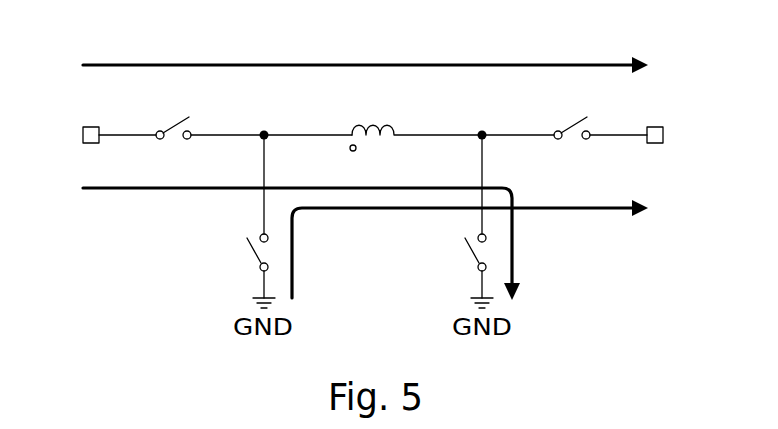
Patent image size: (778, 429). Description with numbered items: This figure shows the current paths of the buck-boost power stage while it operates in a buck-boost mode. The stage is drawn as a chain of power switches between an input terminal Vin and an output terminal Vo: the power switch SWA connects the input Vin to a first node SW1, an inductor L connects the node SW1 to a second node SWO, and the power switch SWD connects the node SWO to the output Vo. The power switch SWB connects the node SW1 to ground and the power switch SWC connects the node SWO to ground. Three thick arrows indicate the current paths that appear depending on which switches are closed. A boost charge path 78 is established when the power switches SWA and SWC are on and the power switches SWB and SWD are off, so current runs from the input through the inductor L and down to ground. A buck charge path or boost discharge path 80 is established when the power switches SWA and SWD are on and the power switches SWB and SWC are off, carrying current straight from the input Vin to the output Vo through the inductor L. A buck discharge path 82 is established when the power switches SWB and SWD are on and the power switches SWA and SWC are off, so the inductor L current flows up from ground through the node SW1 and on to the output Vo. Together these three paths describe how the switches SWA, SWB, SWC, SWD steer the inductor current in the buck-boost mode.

The buck charge path or boost discharge path 80 is at (551, 64).
The buck discharge path 82 is at (551, 206).
The boost charge path 78 is at (514, 258).
The power switch SWA is at (203, 113).
The power switch SWB is at (227, 221).
The power switch SWC is at (445, 221).
The power switch SWD is at (593, 113).
The switching node SW1 is at (294, 120).
The output switching node SWO is at (503, 120).
The inductor L is at (416, 147).
The input voltage terminal Vin is at (94, 136).
The output voltage terminal Vo is at (677, 136).